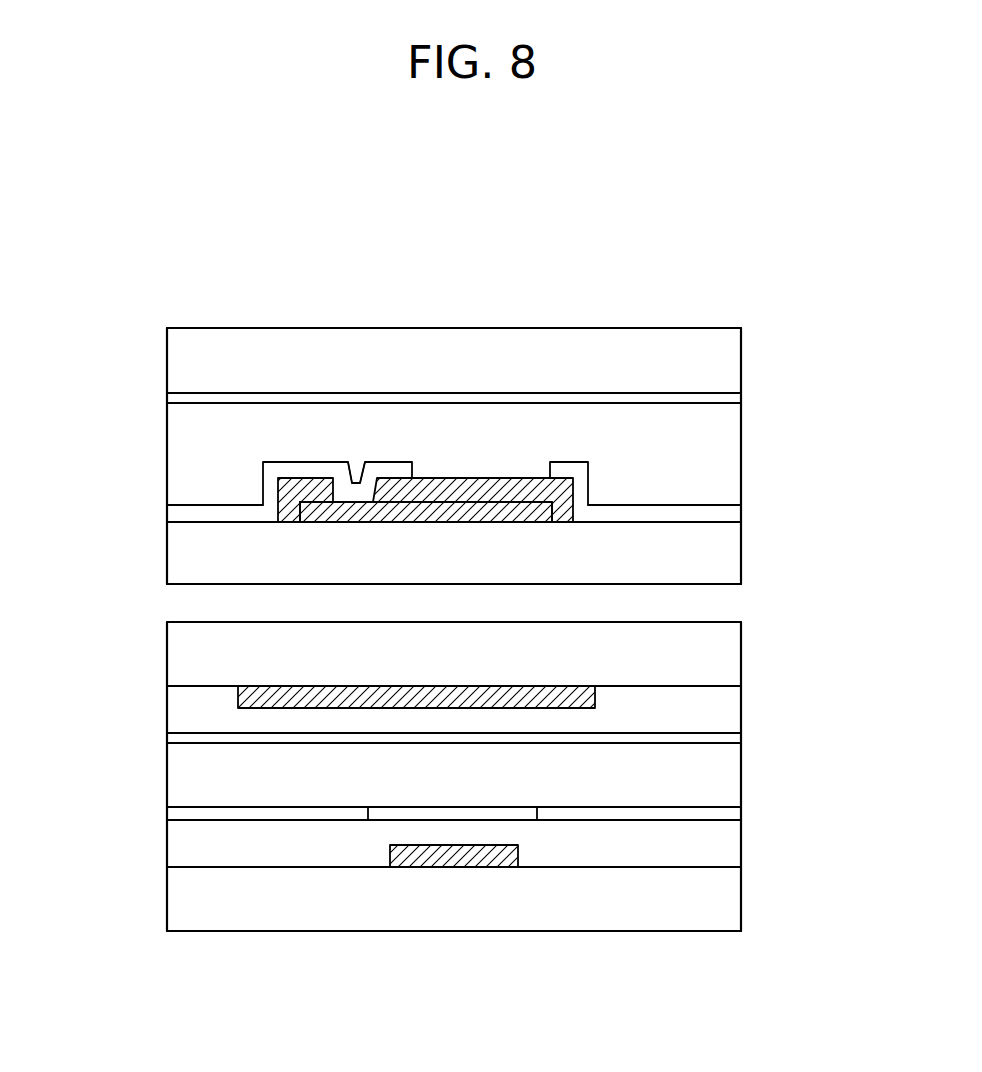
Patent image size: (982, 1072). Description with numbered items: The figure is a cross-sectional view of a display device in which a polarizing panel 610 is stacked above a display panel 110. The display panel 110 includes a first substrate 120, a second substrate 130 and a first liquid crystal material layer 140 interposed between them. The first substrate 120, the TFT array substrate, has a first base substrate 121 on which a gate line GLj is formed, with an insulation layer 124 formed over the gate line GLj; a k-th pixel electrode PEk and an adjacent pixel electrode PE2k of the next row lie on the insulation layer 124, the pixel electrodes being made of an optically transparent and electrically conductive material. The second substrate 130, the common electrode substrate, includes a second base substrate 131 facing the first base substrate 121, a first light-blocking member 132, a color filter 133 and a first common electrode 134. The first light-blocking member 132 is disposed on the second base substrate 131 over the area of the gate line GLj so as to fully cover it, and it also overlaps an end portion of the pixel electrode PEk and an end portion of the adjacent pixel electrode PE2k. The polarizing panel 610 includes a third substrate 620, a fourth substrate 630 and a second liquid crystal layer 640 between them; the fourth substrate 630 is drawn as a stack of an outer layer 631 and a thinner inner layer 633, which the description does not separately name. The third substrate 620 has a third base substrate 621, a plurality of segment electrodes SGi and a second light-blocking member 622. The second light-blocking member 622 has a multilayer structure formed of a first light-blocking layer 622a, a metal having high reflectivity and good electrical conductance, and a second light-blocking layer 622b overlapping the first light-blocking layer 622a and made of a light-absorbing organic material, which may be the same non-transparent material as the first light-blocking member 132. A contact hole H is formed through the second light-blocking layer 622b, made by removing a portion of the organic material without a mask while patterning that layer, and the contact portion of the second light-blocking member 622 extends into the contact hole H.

The polarizing panel 610 is at (105, 557).
The third substrate 620 is at (155, 508).
The third base substrate 621 is at (741, 548).
The second light-blocking member 622 is at (538, 262).
The first light-blocking layer 622a is at (448, 507).
The second light-blocking layer 622b is at (518, 490).
The fourth substrate 630 is at (155, 330).
The protective substrate 631 is at (741, 367).
The adhesive layer 633 is at (741, 398).
The second liquid crystal layer 640 is at (155, 403).
The contact hole H is at (356, 470).
The segment electrode SGi is at (238, 512).
The display panel 110 is at (105, 667).
The first substrate 120 is at (155, 810).
The first base substrate 121 is at (741, 893).
The insulation layer 124 is at (741, 847).
The second substrate 130 is at (155, 622).
The second base substrate 131 is at (738, 650).
The first light-blocking member 132 is at (596, 697).
The color filter 133 is at (741, 720).
The first common electrode 134 is at (741, 741).
The first liquid crystal material layer 140 is at (155, 736).
The gate line GLj is at (456, 867).
The pixel electrode PEk is at (643, 821).
The pixel electrode PE2k is at (280, 818).